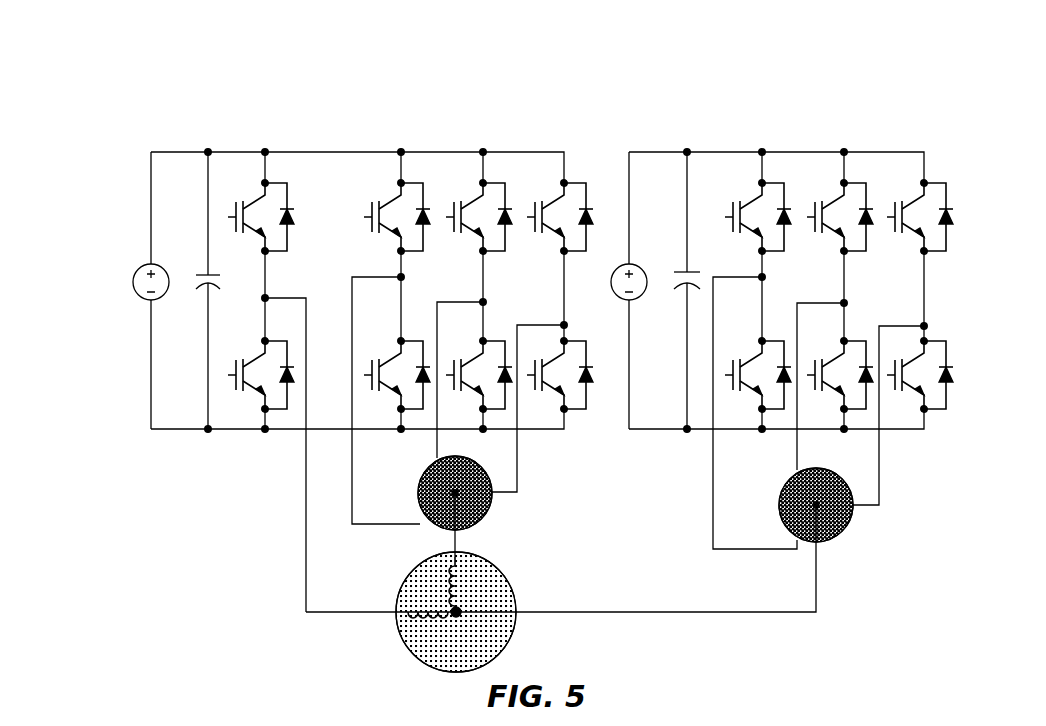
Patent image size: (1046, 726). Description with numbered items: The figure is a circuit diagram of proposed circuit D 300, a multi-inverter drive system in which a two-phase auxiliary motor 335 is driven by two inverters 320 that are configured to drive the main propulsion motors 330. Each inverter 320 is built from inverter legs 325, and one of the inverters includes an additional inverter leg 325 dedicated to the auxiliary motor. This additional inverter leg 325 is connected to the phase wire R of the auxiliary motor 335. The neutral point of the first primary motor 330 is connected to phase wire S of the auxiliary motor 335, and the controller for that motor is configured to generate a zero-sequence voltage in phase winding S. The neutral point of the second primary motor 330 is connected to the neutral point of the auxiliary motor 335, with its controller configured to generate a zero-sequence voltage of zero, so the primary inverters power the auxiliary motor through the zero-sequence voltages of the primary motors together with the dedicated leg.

The proposed circuit D 300 is at (93, 74).
The inverter 320 is at (585, 93).
The additional inverter leg 325 is at (305, 150).
The primary motor 330 is at (491, 504).
The auxiliary motor 335 is at (514, 628).